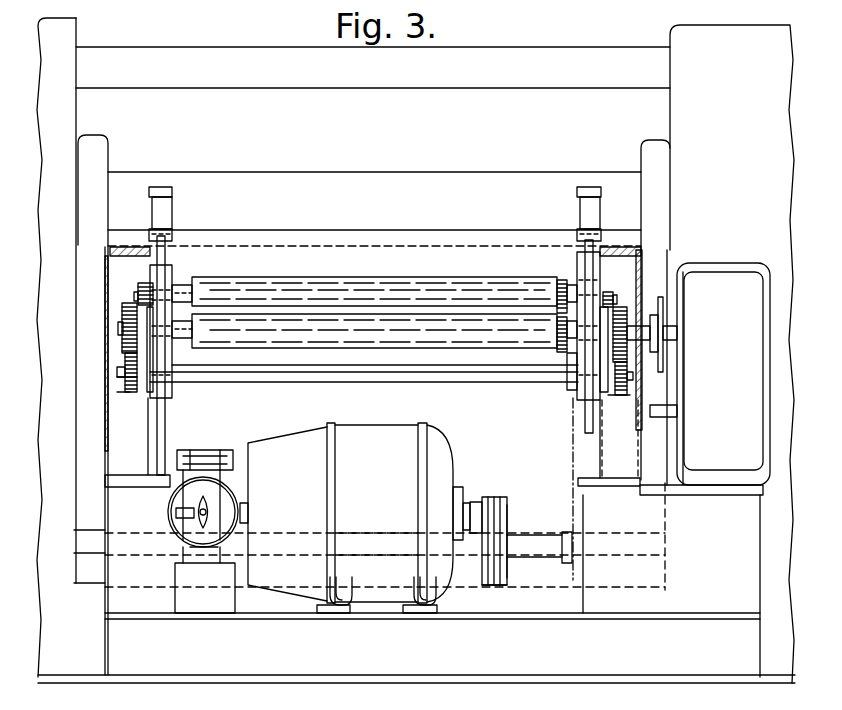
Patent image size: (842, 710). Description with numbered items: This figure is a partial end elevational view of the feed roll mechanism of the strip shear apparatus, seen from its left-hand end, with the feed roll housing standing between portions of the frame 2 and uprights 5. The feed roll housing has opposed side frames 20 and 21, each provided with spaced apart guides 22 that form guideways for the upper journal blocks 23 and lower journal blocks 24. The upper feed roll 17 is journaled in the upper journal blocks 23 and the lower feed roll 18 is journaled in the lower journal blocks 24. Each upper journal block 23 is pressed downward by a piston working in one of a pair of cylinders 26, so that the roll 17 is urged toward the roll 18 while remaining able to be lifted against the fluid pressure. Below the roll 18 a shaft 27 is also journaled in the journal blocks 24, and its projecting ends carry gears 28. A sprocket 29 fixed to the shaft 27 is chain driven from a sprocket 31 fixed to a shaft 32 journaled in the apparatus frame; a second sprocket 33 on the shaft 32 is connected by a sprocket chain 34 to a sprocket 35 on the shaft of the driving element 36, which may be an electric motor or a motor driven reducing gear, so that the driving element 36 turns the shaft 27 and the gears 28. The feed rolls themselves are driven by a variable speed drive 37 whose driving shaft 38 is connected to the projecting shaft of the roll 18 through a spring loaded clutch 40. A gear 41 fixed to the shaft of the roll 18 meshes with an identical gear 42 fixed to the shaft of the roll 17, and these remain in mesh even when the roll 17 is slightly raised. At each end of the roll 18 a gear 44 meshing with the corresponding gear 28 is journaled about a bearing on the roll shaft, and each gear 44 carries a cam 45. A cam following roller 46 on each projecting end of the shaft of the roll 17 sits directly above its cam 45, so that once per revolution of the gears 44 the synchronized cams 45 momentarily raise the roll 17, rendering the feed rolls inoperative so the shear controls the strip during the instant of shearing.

The machine frame 2 is at (721, 94).
The upright column 5 is at (88, 178).
The feed roll 17 is at (283, 288).
The feed roll 18 is at (300, 348).
The side frame 20 is at (104, 460).
The side frame 21 is at (626, 468).
The guides 22 is at (165, 420).
The upper journal block 23 is at (172, 278).
The lower journal block 24 is at (172, 394).
The cylinder 26 is at (176, 210).
The shaft 27 is at (262, 370).
The gear 28 is at (133, 392).
The sprocket 29 is at (572, 384).
The sprocket 31 is at (562, 532).
The shaft 32 is at (528, 540).
The sprocket 33 is at (506, 578).
The sprocket chain 34 is at (498, 508).
The sprocket 35 is at (508, 502).
The driving element 36 is at (388, 454).
The variable speed drive 37 is at (730, 386).
The driving shaft 38 is at (666, 340).
The spring loaded clutch 40 is at (656, 322).
The gear 41 is at (556, 352).
The gear 42 is at (556, 288).
The gear 44 is at (125, 322).
The cam 45 is at (125, 360).
The cam following roller 46 is at (140, 290).